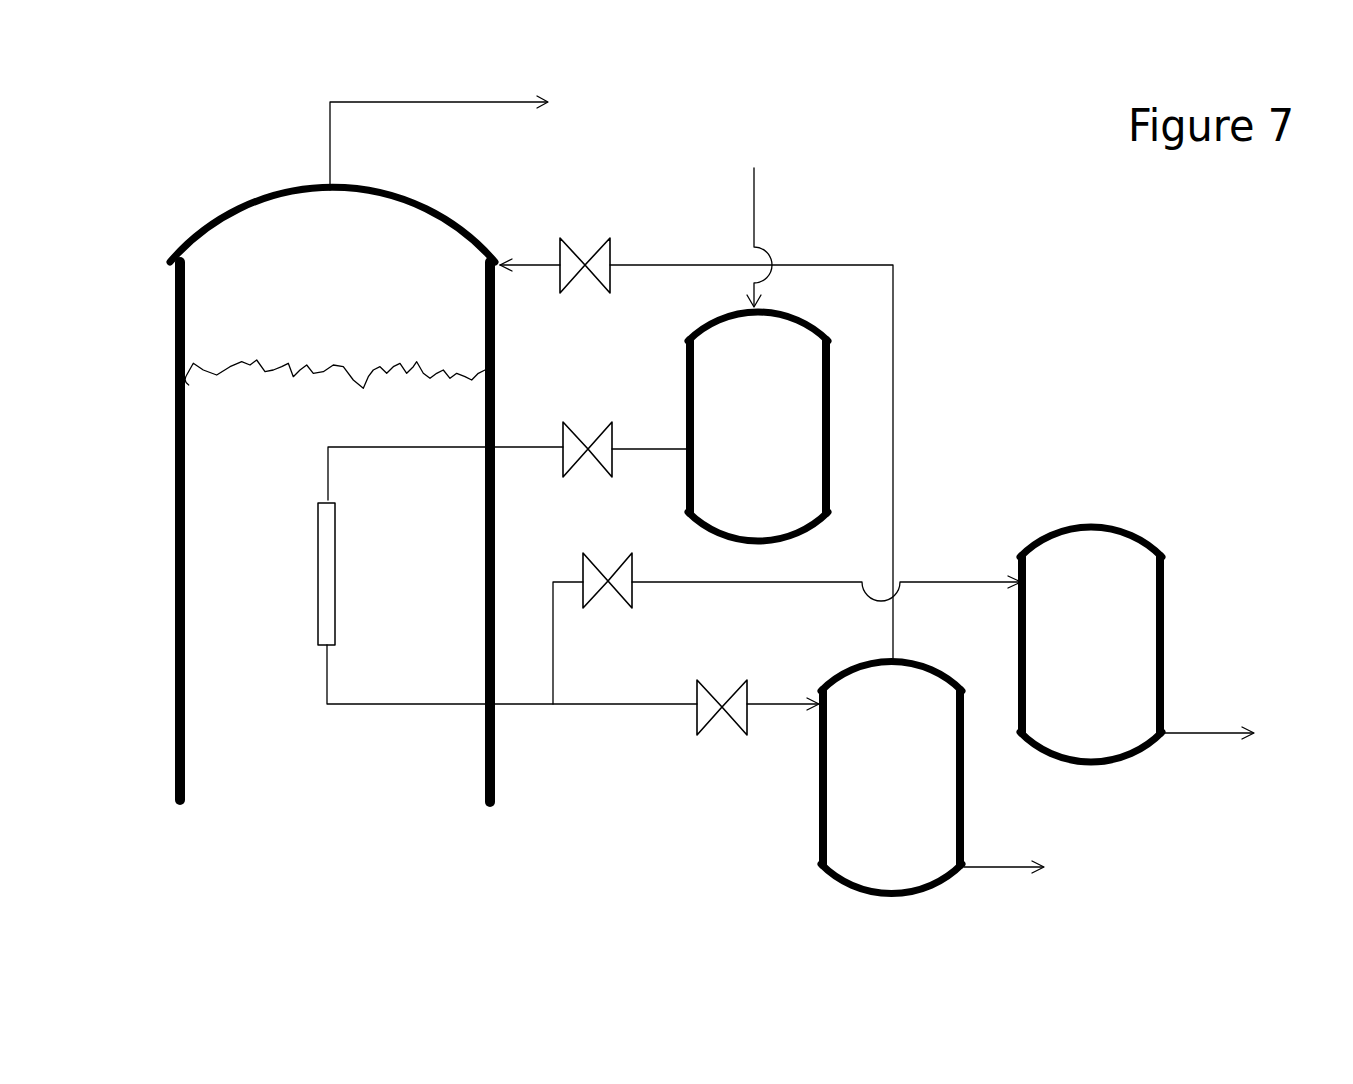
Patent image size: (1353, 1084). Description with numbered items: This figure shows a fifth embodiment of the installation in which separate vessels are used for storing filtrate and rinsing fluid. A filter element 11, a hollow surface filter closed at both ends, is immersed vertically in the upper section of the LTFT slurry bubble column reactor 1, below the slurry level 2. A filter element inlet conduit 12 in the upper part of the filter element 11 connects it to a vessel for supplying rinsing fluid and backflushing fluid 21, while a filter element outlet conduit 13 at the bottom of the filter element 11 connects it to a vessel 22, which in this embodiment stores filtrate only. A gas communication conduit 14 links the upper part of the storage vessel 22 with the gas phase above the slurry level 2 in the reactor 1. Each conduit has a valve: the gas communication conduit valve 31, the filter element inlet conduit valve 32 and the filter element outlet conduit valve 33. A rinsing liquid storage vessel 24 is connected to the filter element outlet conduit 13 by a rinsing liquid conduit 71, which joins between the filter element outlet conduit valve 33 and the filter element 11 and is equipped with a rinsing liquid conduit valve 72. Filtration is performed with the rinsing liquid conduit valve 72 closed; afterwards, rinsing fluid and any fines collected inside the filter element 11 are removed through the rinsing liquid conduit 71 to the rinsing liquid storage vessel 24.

The LTFT slurry bubble column reactor 1 is at (359, 449).
The slurry level 2 is at (335, 355).
The filter element 11 is at (349, 574).
The filter element inlet conduit 12 is at (445, 473).
The filter element outlet conduit 13 is at (573, 677).
The gas communication conduit 14 is at (751, 414).
The vessel for supplying rinsing fluid and backflushing fluid 21 is at (758, 426).
The vessel for storage of filtrate 22 is at (932, 778).
The rinsing liquid storage vessel 24 is at (1137, 644).
The gas communication conduit valve 31 is at (556, 237).
The filter element inlet conduit valve 32 is at (626, 427).
The filter element outlet conduit valve 33 is at (722, 685).
The rinsing liquid conduit 71 is at (787, 619).
The rinsing liquid conduit valve 72 is at (607, 557).